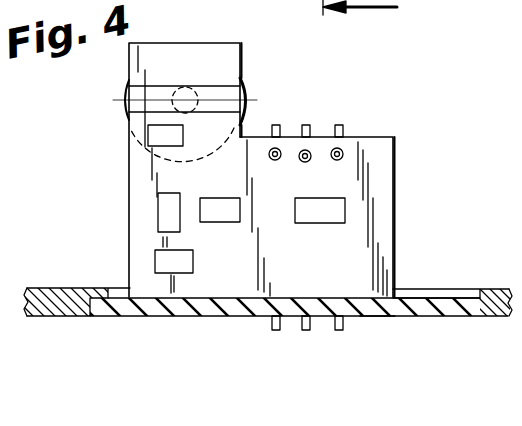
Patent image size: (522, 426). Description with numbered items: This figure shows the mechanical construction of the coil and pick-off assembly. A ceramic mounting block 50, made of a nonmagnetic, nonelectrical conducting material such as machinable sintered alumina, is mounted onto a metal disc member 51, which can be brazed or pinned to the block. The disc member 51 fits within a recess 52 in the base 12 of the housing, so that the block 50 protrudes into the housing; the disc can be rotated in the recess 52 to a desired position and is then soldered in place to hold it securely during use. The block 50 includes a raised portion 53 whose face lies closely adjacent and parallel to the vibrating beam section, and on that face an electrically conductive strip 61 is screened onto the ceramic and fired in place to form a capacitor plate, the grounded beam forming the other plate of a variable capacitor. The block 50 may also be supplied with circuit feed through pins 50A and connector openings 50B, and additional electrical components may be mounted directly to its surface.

The base 12 is at (63, 288).
The ceramic mounting block 50 is at (383, 195).
The circuit feed through pin 50A is at (338, 123).
The connector openings 50B is at (334, 160).
The disc member 51 is at (379, 306).
The recess 52 is at (90, 317).
The raised portion 53 is at (213, 58).
The electrically conductive strip 61 is at (148, 95).